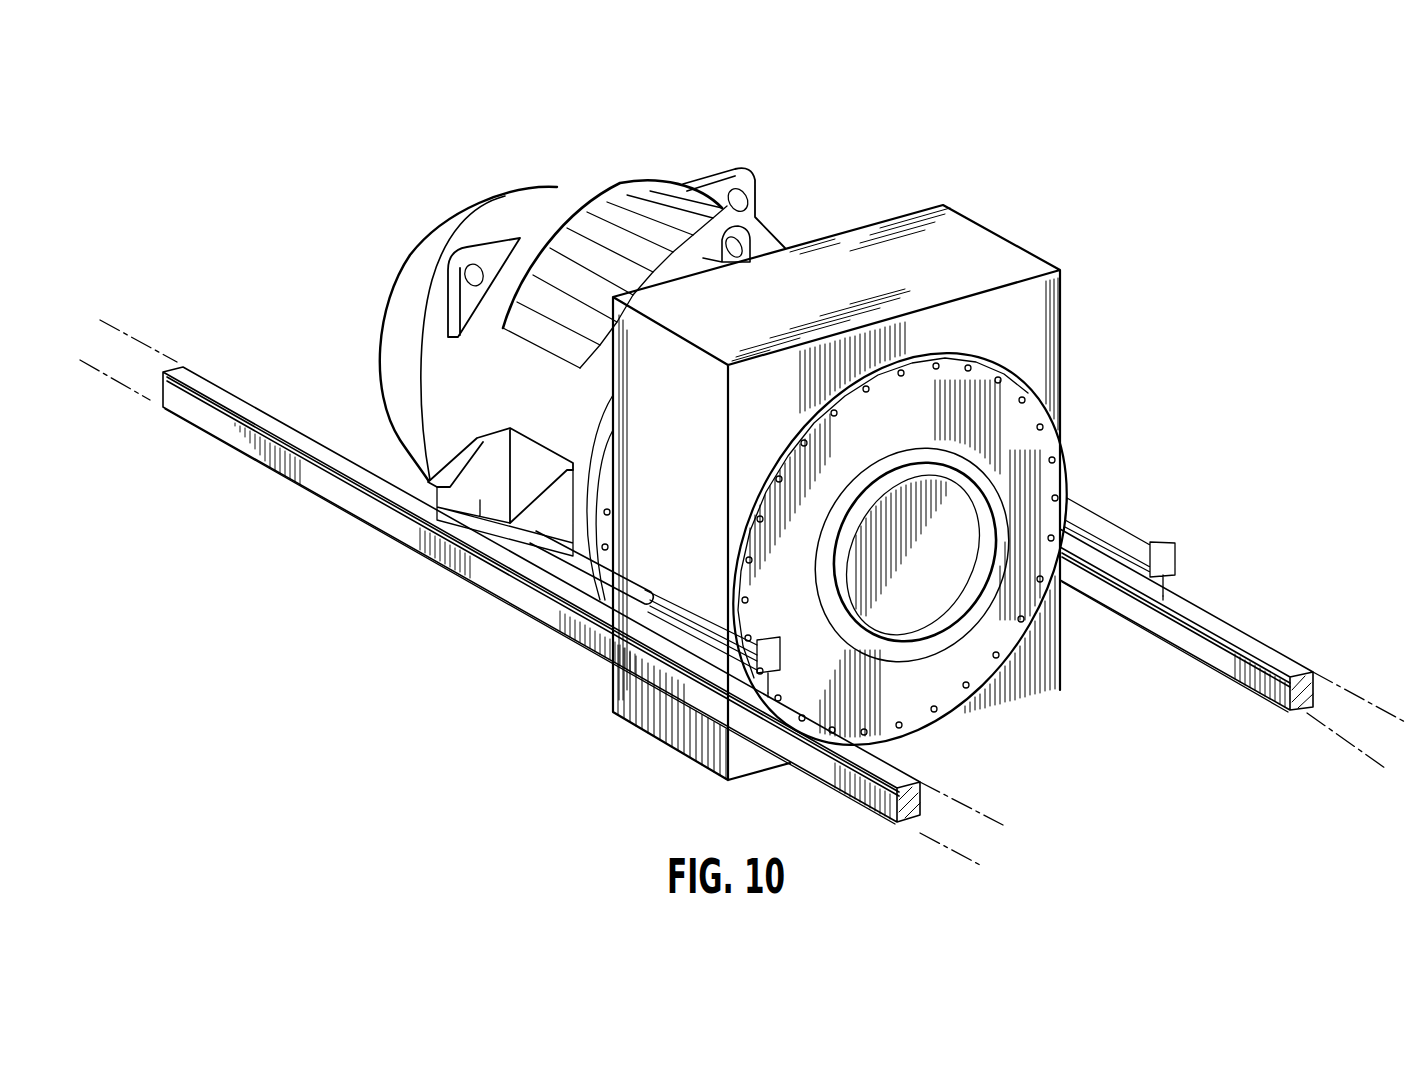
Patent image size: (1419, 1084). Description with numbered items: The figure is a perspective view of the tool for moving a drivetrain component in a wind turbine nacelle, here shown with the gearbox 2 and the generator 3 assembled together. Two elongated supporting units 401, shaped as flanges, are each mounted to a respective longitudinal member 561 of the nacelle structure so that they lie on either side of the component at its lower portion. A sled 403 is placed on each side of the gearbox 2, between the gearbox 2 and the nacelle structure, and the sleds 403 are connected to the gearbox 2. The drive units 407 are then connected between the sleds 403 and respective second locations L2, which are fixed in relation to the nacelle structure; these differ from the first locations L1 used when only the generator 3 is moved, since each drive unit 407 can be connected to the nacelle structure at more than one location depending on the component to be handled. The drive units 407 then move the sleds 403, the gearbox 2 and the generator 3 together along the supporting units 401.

The gearbox 2 is at (770, 236).
The generator 3 is at (978, 713).
The supporting unit 401 is at (232, 402).
The sled 403 is at (500, 541).
The drive unit 407 is at (676, 608).
The longitudinal member 561 is at (215, 433).
The first location L1 is at (1232, 650).
The second location L2 is at (710, 680).